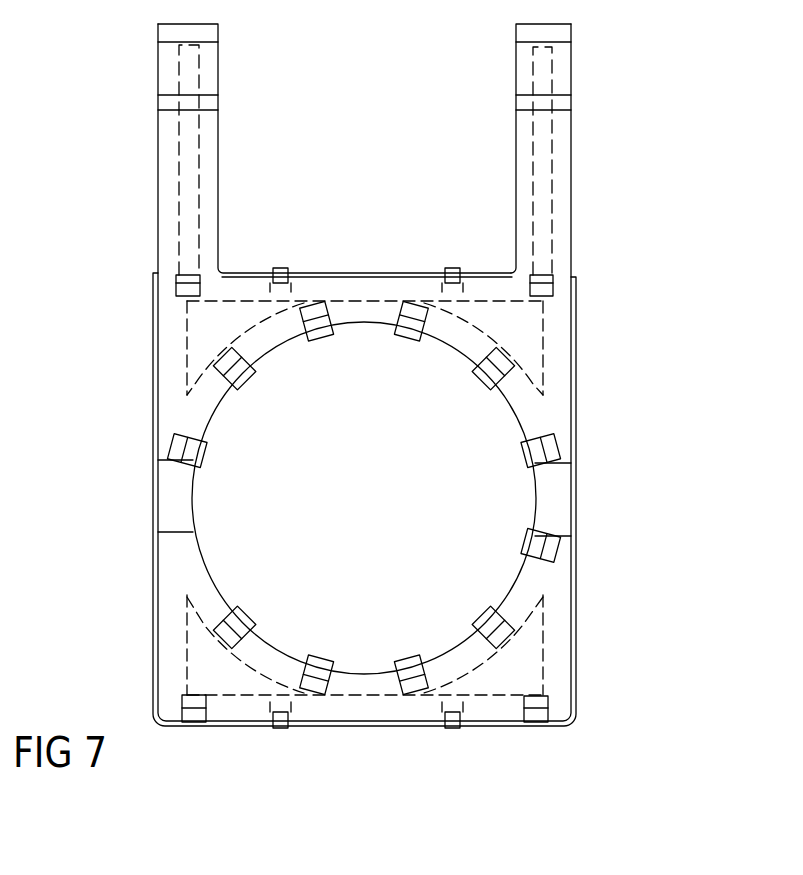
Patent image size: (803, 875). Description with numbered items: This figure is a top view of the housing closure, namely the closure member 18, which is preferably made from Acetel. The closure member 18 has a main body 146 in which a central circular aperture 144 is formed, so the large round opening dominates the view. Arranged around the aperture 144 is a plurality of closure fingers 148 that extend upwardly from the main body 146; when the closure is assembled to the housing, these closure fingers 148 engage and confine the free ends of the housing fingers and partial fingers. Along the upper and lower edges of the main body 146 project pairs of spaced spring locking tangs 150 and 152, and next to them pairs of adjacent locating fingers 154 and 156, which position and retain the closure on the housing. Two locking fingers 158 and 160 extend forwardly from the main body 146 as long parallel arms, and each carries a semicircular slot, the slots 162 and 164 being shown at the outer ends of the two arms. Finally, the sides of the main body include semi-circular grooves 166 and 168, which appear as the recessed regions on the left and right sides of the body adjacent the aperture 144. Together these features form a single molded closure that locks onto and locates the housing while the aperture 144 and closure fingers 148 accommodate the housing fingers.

The closure member 18 is at (614, 426).
The central circular aperture 144 is at (504, 604).
The main body 146 is at (553, 368).
The closure fingers 148 is at (195, 452).
The spring locking tangs 150 is at (283, 728).
The spring locking tangs 152 is at (447, 268).
The locating fingers 154 is at (195, 723).
The locating fingers 156 is at (178, 273).
The locking finger 158 is at (218, 138).
The locking finger 160 is at (572, 145).
The semicircular slot 162 is at (172, 62).
The semicircular slot 164 is at (562, 63).
The semi-circular groove 166 is at (168, 491).
The semi-circular groove 168 is at (562, 492).